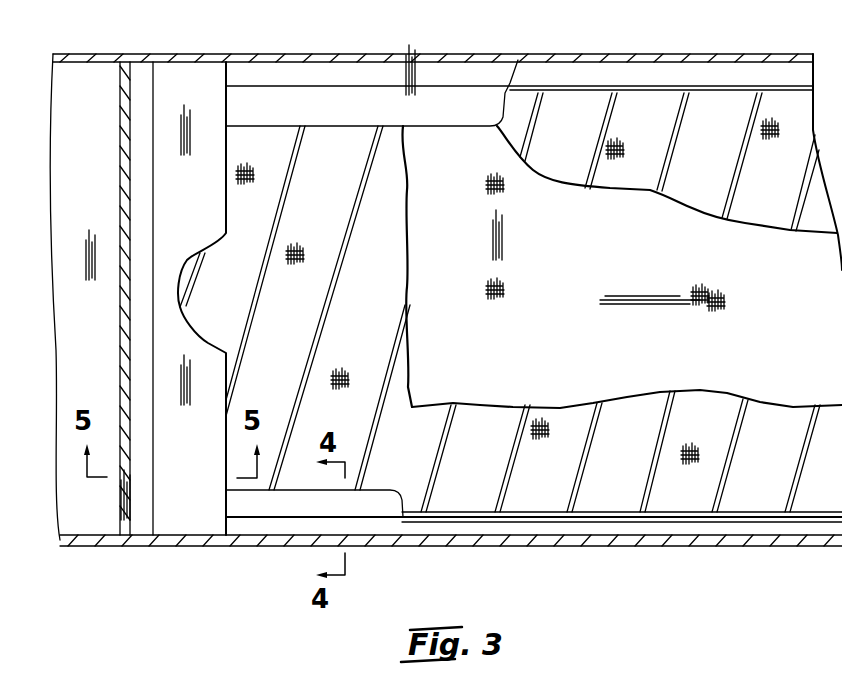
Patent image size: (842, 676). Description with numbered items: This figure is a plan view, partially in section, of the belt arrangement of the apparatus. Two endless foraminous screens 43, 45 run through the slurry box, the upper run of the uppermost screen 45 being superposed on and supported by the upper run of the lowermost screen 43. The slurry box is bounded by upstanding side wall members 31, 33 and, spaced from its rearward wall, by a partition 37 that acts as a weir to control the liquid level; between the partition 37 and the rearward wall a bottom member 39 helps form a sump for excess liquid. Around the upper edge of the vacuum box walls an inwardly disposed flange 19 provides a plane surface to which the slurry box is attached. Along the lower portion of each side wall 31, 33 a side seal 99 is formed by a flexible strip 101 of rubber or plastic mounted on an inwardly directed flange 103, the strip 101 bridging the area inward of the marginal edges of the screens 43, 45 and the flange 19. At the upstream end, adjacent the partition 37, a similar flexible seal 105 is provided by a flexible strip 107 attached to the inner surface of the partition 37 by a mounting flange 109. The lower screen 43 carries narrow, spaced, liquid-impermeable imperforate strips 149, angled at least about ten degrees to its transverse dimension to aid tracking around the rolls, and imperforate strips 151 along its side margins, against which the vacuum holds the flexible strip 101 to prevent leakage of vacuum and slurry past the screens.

The flange 19 is at (673, 528).
The side wall member 31 is at (410, 542).
The side wall member 33 is at (428, 57).
The partition 37 is at (132, 72).
The bottom member 39 is at (72, 137).
The lowermost foraminous screen 43 is at (359, 275).
The uppermost foraminous screen 45 is at (593, 277).
The side seal 99 is at (472, 74).
The flexible strip 101 is at (288, 100).
The inwardly directed flange 103 is at (357, 75).
The flexible seal 105 is at (137, 161).
The flexible strip 107 is at (190, 77).
The mounting flange 109 is at (140, 223).
The imperforate strip 149 is at (570, 472).
The imperforate strip 151 is at (645, 86).